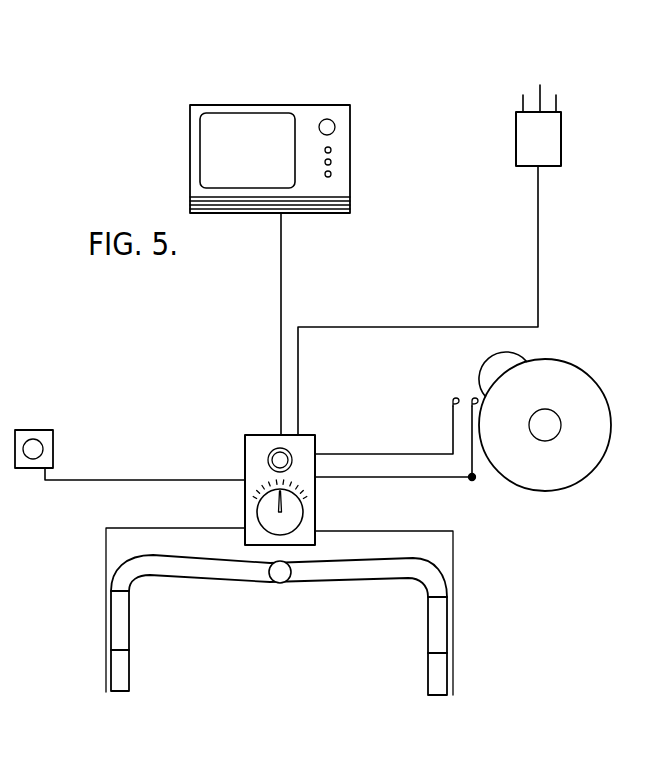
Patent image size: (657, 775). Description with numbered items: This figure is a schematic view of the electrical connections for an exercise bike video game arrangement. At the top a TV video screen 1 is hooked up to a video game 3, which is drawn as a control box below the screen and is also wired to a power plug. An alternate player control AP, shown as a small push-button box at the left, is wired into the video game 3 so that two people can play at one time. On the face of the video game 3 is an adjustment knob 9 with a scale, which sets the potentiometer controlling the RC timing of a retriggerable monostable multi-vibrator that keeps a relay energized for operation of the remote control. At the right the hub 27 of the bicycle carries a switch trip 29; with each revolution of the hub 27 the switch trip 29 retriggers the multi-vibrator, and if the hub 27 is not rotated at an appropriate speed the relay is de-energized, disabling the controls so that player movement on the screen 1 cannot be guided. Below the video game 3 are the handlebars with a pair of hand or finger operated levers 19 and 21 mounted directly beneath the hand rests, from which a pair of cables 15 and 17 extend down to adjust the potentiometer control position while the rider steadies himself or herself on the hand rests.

The TV video screen 1 is at (277, 105).
The video game 3 is at (308, 435).
The adjustment knob 9 is at (302, 517).
The cable 15 is at (398, 531).
The cable 17 is at (163, 528).
The hand lever 19 is at (453, 663).
The hand lever 21 is at (107, 667).
The hub 27 is at (578, 383).
The switch trip 29 is at (515, 358).
The alternate player control AP is at (36, 470).